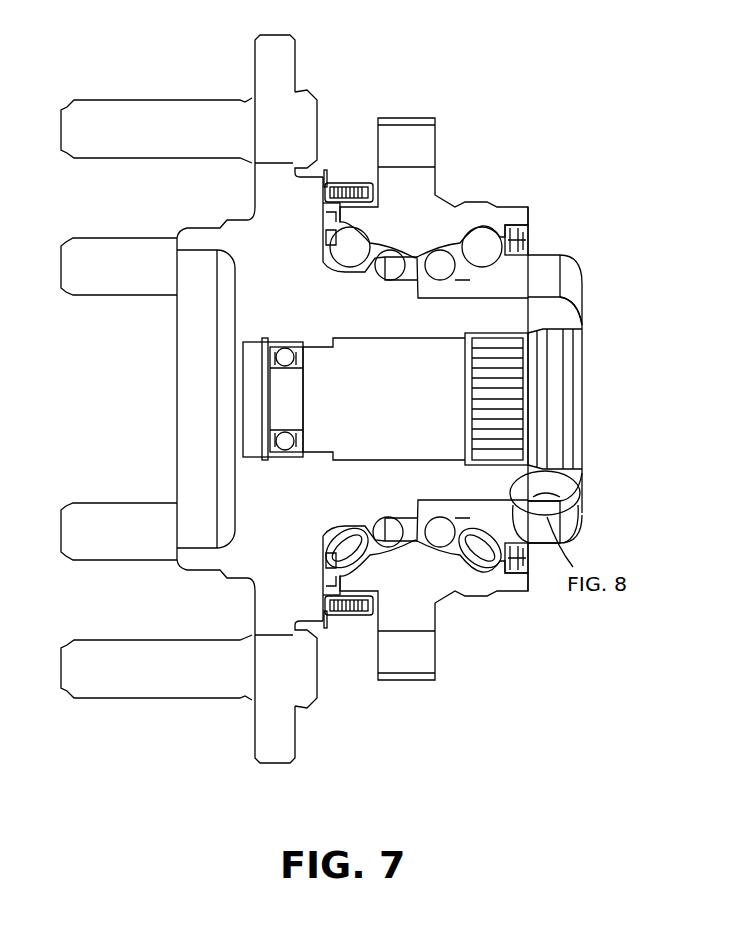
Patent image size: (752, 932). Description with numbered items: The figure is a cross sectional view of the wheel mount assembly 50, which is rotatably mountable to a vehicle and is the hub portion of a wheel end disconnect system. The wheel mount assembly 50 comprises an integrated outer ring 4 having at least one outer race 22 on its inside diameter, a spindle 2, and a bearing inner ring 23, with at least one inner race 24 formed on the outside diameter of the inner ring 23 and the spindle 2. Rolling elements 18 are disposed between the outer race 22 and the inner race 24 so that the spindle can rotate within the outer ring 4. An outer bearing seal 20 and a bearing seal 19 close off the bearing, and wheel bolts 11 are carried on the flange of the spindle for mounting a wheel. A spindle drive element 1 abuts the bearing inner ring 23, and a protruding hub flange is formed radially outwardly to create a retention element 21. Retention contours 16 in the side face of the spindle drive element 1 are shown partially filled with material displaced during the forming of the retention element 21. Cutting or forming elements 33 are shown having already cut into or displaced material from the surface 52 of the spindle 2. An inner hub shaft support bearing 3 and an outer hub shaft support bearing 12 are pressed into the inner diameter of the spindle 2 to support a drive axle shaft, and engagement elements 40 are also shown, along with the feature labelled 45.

The spindle drive element 1 is at (553, 267).
The spindle 2 is at (268, 75).
The inner hub shaft support bearing 3 is at (513, 413).
The integrated outer ring 4 is at (415, 197).
The wheel bolts 11 is at (93, 135).
The outer hub shaft support bearing 12 is at (283, 400).
The retention contours 16 is at (535, 502).
The rolling elements 18 is at (350, 247).
The bearing seal 19 is at (527, 242).
The outer bearing seal 20 is at (352, 183).
The retention element 21 is at (572, 515).
The outer race 22 is at (340, 220).
The bearing inner ring 23 is at (513, 287).
The inner race 24 is at (343, 268).
The cutting or forming elements 33 is at (548, 297).
The engagement elements 40 is at (547, 255).
The end face 45 is at (552, 277).
The wheel mount assembly 50 is at (540, 95).
The surface 52 is at (535, 542).